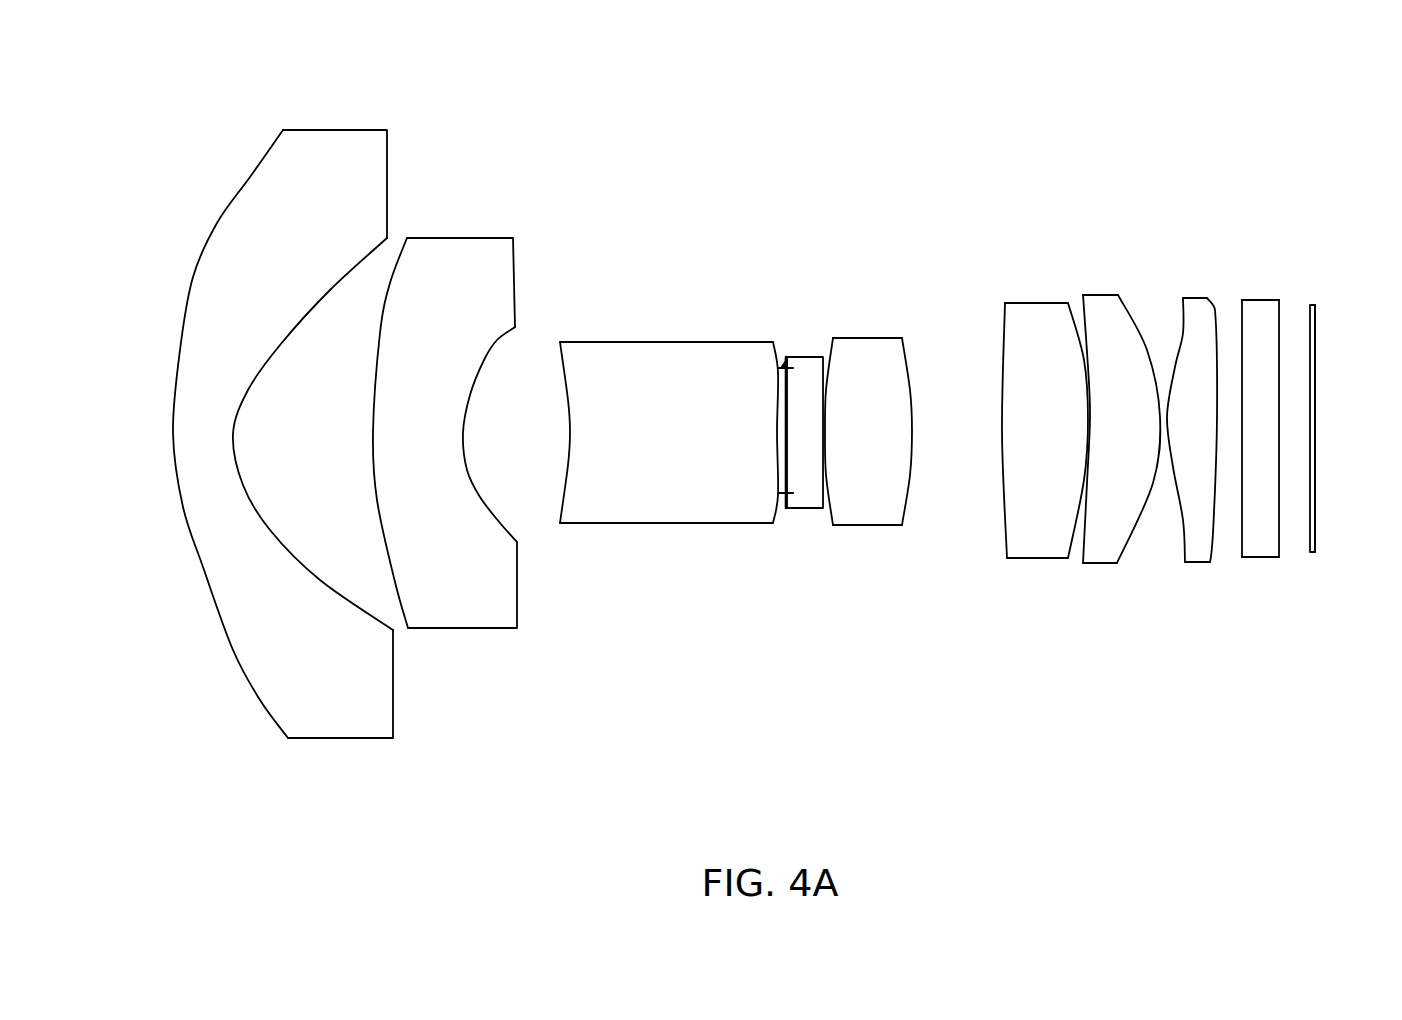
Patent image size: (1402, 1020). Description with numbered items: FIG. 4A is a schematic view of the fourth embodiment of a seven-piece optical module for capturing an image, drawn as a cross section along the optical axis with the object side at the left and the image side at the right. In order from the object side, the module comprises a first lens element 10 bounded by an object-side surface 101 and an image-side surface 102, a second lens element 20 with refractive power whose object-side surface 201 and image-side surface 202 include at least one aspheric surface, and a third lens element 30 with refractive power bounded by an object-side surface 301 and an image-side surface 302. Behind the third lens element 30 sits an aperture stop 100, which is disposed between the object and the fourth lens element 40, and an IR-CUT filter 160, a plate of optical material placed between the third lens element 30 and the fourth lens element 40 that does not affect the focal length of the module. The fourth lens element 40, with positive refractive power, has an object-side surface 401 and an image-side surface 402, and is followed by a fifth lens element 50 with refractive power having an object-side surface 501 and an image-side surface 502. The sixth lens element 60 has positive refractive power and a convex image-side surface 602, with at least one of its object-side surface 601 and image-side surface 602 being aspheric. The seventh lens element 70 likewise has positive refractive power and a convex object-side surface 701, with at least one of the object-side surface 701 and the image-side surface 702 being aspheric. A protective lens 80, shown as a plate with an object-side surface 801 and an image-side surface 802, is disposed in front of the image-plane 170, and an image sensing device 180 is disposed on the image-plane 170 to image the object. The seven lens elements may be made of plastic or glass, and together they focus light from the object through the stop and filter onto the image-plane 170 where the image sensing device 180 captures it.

The first lens element 10 is at (280, 446).
The object-side surface of first lens element 101 is at (262, 698).
The image-side surface of first lens element 102 is at (395, 695).
The second lens element 20 is at (470, 503).
The object-side surface of the second lens element 201 is at (395, 582).
The image-side surface of the second lens element 202 is at (517, 582).
The third lens element 30 is at (669, 527).
The object-side surface of third lens element 301 is at (573, 500).
The image-side surface of third lens element 302 is at (775, 510).
The aperture stop 100 is at (783, 365).
The IR-CUT filter 160 is at (805, 357).
The fourth lens element 40 is at (892, 524).
The object-side surface of fourth lens element 401 is at (833, 500).
The image-side surface of fourth lens element 402 is at (907, 507).
The fifth lens element 50 is at (1030, 524).
The object-side surface of fifth lens element 501 is at (1003, 523).
The image-side surface of fifth lens element 502 is at (1080, 520).
The sixth lens element 60 is at (1147, 524).
The object-side surface of the sixth lens element 601 is at (1097, 528).
The image-side surface of the sixth lens element 602 is at (1140, 533).
The seventh lens element 70 is at (1250, 524).
The object-side surface of the seventh lens element 701 is at (1185, 563).
The image-side surface of the seventh lens element 702 is at (1215, 530).
The protective lens 80 is at (1320, 385).
The object-side surface of filter 801 is at (1243, 343).
The image-side surface of filter 802 is at (1280, 437).
The image-plane 170 is at (1312, 502).
The image sensing device 180 is at (1345, 382).